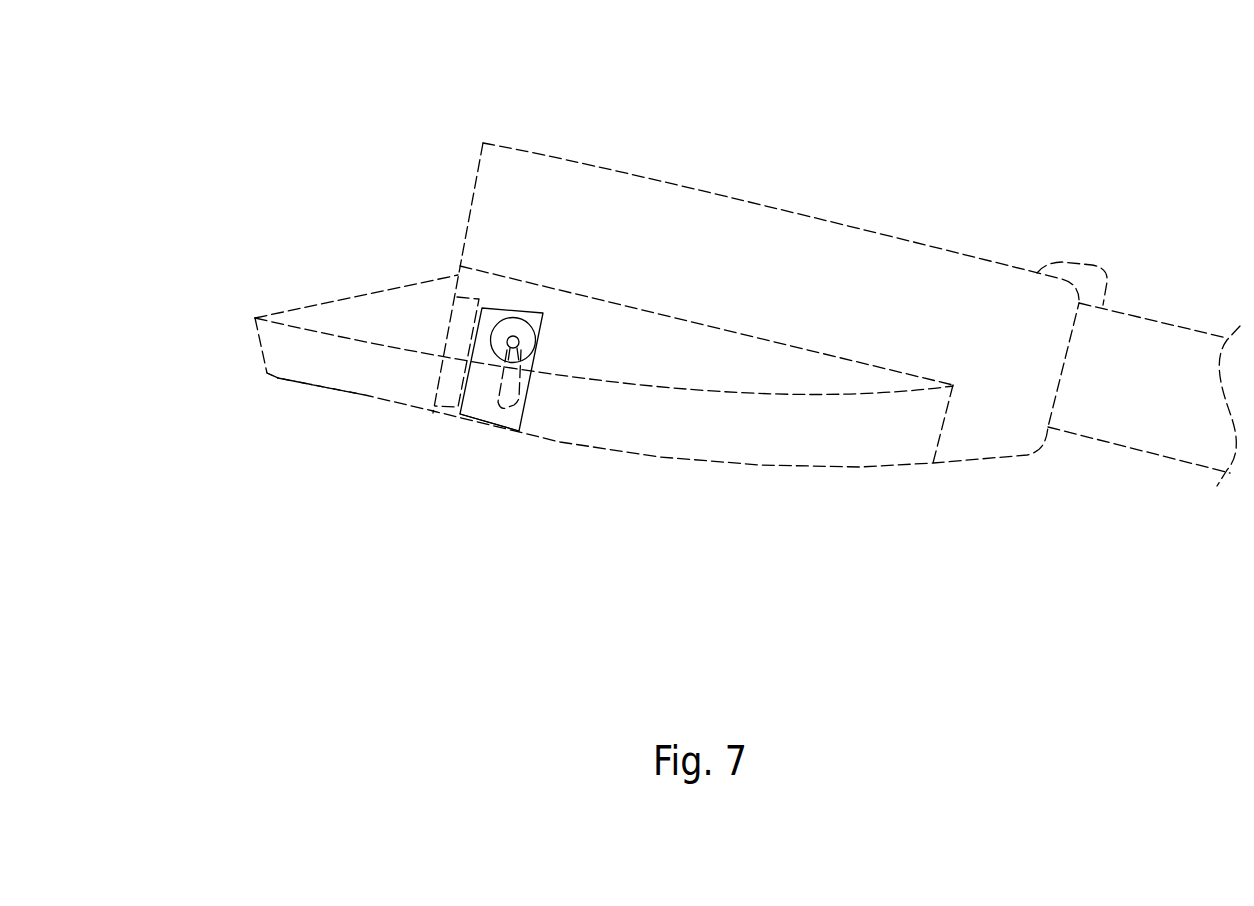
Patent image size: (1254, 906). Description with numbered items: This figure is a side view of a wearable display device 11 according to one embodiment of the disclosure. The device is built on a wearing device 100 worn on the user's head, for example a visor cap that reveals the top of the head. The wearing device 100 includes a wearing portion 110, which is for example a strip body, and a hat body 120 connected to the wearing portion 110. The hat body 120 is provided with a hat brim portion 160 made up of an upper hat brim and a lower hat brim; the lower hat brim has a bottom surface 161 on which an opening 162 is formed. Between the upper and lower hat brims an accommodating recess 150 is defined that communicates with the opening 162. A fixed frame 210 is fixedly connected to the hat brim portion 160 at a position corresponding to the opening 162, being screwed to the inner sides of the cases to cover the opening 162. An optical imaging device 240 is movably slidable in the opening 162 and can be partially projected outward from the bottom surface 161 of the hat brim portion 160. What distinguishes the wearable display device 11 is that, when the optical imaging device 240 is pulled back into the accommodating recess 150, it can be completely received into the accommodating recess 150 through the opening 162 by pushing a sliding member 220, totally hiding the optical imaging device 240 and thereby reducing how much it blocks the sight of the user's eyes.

The wearable display device 11 is at (226, 60).
The wearing device 100 is at (1152, 186).
The wearing portion 110 is at (1132, 337).
The hat body 120 is at (888, 302).
The accommodating recess 150 is at (465, 292).
The hat brim portion 160 is at (253, 317).
The bottom surface 161 is at (284, 378).
The opening 162 is at (502, 438).
The fixed frame 210 is at (454, 372).
The sliding member 220 is at (500, 330).
The optical imaging device 240 is at (483, 402).